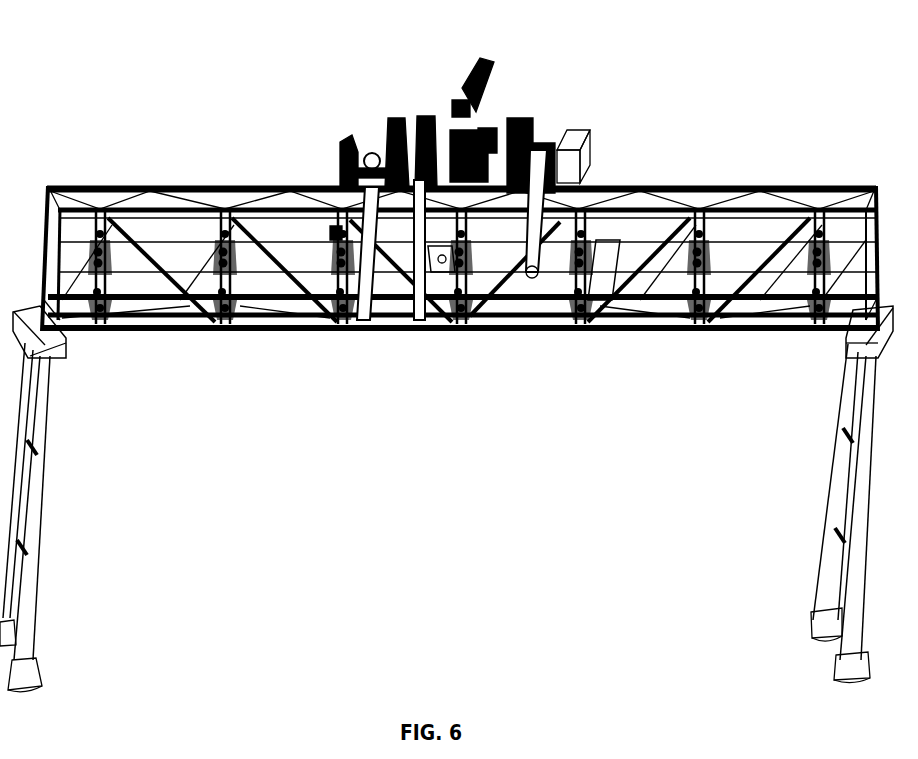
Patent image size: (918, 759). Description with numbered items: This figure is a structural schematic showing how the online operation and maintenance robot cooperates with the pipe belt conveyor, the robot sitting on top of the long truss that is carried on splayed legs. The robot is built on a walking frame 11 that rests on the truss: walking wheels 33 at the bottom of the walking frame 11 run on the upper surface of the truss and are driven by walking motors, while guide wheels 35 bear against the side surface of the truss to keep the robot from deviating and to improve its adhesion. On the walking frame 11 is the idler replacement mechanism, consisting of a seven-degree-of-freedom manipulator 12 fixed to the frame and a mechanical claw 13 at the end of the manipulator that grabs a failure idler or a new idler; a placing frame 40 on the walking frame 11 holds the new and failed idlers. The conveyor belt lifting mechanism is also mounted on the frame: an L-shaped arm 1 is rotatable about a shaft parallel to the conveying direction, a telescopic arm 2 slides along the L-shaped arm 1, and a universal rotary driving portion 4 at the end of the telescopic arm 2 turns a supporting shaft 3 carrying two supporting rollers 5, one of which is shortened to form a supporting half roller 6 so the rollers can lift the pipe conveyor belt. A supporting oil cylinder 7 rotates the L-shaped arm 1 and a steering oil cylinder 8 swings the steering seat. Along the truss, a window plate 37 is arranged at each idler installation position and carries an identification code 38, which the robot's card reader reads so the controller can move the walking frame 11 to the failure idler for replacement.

The L-shaped arm 1 is at (392, 160).
The telescopic arm 2 is at (447, 300).
The supporting shaft 3 is at (490, 295).
The universal rotary driving portion 4 is at (418, 300).
The supporting roller 5 is at (584, 300).
The supporting half roller 6 is at (610, 305).
The supporting oil cylinder 7 is at (380, 160).
The steering oil cylinder 8 is at (347, 152).
The walking frame 11 is at (443, 163).
The seven-degree-of-freedom manipulator 12 is at (487, 65).
The mechanical claw 13 is at (490, 137).
The walking wheel 33 is at (550, 150).
The guide wheel 35 is at (592, 178).
The window plate 37 is at (334, 318).
The identification code 38 is at (364, 320).
The placing frame 40 is at (530, 130).